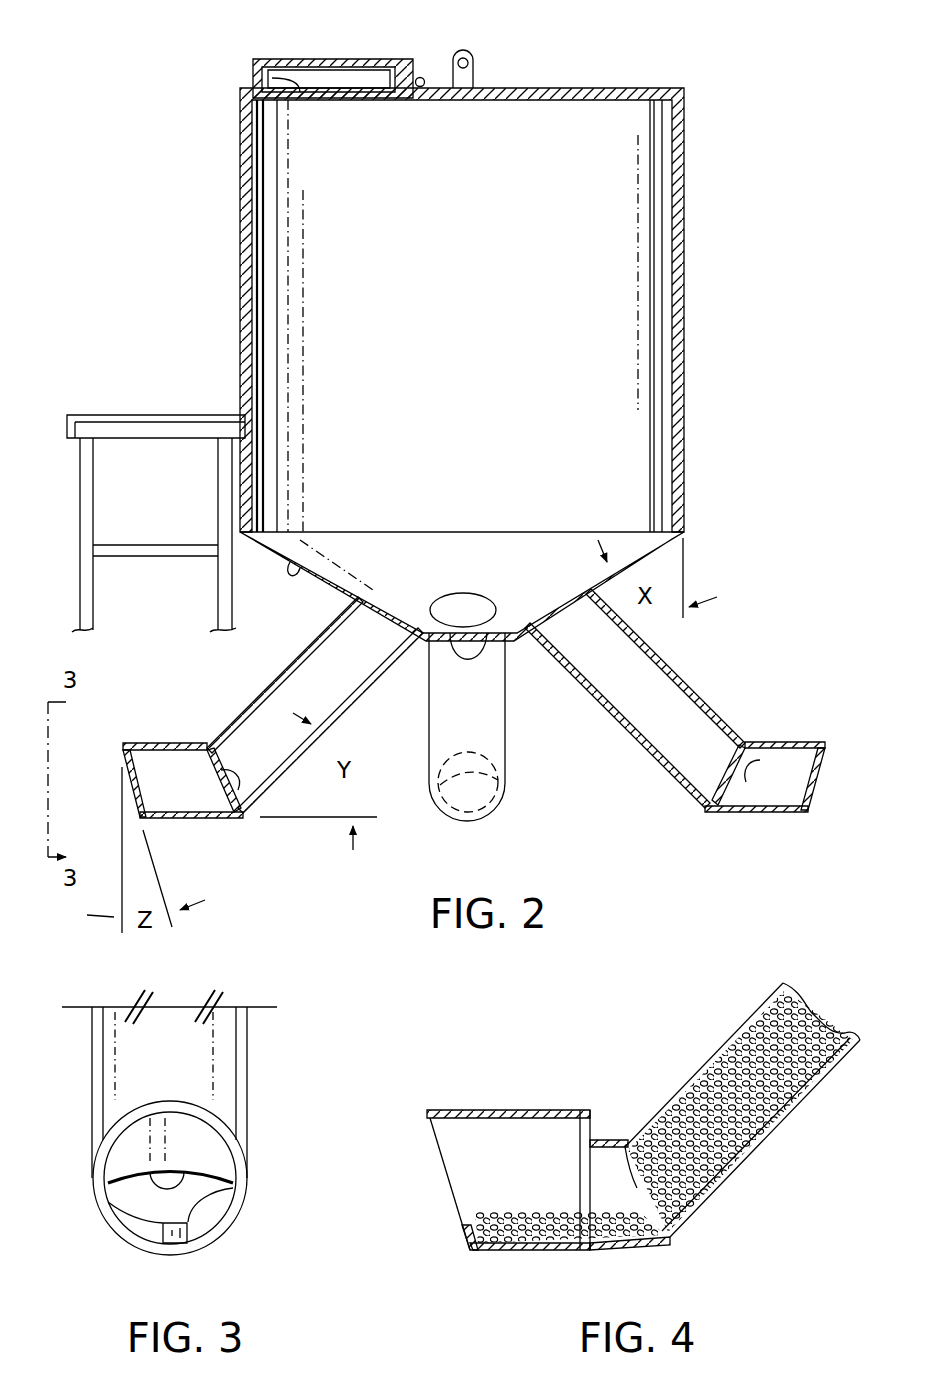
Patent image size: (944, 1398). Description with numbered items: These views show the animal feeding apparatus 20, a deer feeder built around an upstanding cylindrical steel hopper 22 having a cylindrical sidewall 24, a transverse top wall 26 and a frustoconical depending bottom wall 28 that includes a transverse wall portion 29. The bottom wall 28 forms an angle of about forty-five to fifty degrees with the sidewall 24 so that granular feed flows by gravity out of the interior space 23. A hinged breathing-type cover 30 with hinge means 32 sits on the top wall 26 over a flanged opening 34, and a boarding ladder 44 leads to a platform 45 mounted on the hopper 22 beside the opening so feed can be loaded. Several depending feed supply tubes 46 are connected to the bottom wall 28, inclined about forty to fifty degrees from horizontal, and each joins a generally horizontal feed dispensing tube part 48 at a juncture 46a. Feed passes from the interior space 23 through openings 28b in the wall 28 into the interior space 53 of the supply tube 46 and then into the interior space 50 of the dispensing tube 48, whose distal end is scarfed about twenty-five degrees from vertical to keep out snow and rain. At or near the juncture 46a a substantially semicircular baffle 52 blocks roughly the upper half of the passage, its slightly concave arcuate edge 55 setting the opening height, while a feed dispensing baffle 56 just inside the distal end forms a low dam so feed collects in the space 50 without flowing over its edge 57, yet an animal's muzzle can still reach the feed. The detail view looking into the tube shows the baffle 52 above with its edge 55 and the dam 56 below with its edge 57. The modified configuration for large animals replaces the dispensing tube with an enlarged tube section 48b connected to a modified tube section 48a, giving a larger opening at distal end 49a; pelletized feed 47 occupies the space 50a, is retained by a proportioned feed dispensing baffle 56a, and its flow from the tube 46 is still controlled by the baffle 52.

In FIG. 2, the animal feeding apparatus 20 is at (714, 190).
In FIG. 2, the hopper 22 is at (690, 277).
In FIG. 2, the interior space 23 is at (462, 322).
In FIG. 2, the sidewall 24 is at (686, 372).
In FIG. 2, the top wall 26 is at (556, 88).
In FIG. 2, the bottom wall 28 is at (300, 566).
In FIG. 2, the openings 28b is at (565, 593).
In FIG. 2, the transverse wall portion 29 is at (500, 628).
In FIG. 2, the cover 30 is at (321, 59).
In FIG. 2, the hinge means 32 is at (419, 77).
In FIG. 2, the flanged opening 34 is at (306, 96).
In FIG. 2, the boarding ladder 44 is at (80, 562).
In FIG. 2, the platform 45 is at (135, 413).
In FIG. 2, the feed supply tube 46 is at (506, 735).
In FIG. 4, the feed supply tube 46 is at (776, 1120).
In FIG. 4, the juncture 46a is at (700, 1212).
In FIG. 4, the pelletized feed 47 is at (518, 1210).
In FIG. 3, the feed dispensing tube part 48 is at (216, 1108).
In FIG. 4, the modified tube section 48a is at (627, 1245).
In FIG. 4, the enlarged tube section 48b is at (440, 1108).
In FIG. 4, the distal end 49a is at (438, 1150).
In FIG. 3, the interior space 50 is at (152, 1222).
In FIG. 4, the space 50a is at (556, 1160).
In FIG. 3, the baffle 52 is at (214, 1160).
In FIG. 4, the baffle 52 is at (665, 1122).
In FIG. 2, the interior space 53 is at (480, 682).
In FIG. 3, the arcuate edge 55 is at (146, 1170).
In FIG. 3, the feed dispensing baffle 56 is at (196, 1240).
In FIG. 4, the feed dispensing baffle 56a is at (466, 1226).
In FIG. 3, the edge 57 is at (231, 1186).